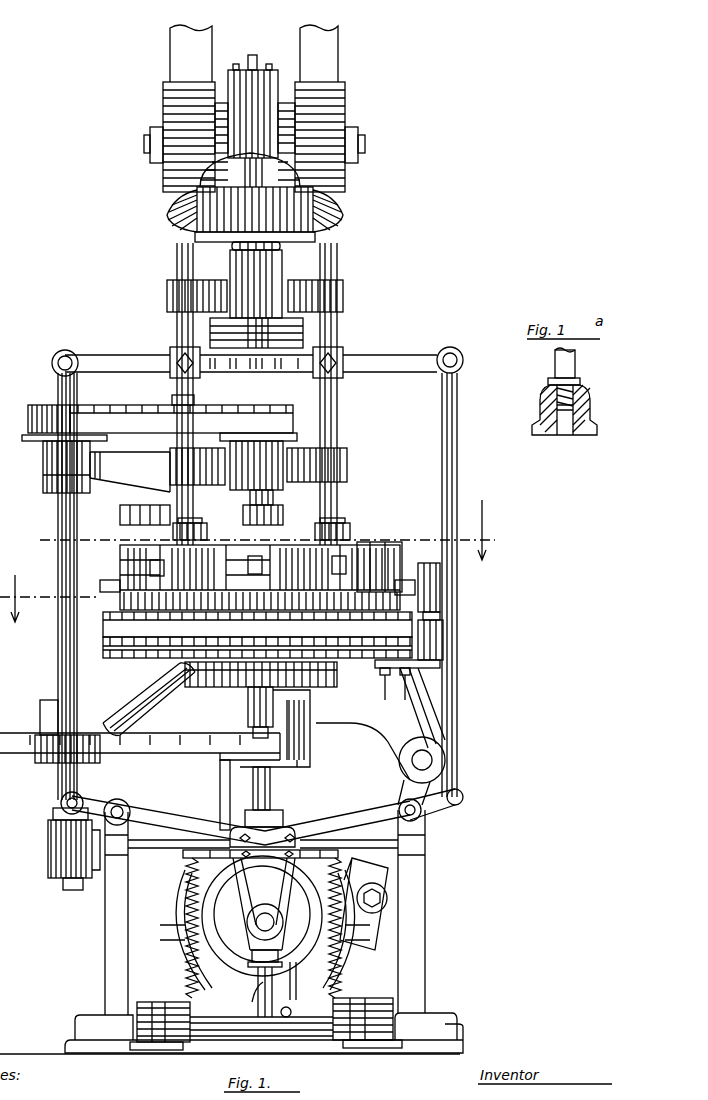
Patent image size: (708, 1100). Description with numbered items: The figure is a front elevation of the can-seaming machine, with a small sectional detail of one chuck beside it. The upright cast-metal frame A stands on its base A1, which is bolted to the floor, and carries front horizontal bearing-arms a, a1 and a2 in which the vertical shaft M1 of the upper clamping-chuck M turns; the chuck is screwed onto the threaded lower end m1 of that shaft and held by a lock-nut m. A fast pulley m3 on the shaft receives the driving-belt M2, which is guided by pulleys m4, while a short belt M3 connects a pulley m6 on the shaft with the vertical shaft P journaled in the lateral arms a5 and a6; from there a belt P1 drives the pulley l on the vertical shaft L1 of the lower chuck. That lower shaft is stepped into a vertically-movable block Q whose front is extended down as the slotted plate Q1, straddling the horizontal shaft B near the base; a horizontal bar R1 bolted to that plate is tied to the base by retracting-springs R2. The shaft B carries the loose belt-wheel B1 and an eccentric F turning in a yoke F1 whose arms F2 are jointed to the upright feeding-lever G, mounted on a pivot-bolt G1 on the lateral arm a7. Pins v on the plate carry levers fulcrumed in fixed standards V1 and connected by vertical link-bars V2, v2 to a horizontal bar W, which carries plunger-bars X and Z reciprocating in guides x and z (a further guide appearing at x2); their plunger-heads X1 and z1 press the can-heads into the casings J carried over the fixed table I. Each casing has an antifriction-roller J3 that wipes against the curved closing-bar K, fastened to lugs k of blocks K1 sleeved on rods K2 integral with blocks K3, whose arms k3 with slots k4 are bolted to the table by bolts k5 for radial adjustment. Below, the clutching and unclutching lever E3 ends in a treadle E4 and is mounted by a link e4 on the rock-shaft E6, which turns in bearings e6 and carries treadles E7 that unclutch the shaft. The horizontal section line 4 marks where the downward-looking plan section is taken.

In FIG. 1, the front horizontal bearing-arm a is at (262, 75).
In FIG. 1, the guide pulleys m4 is at (357, 92).
In FIG. 1, the driving-belt M2 is at (343, 210).
In FIG. 1, the fast pulley m3 is at (315, 238).
In FIG. 1, the front horizontal bearing-arm a1 is at (282, 272).
In FIG. 1, the guide z is at (343, 288).
In FIG. 1, the guide x is at (167, 291).
In FIG. 1, the upright cast-metal frame A is at (303, 330).
In FIG. 1, the plunger-bar Z is at (343, 343).
In FIG. 1, the horizontal bar W is at (125, 355).
In FIG. 1, the vertical shaft P is at (32, 402).
In FIG. 1, the vertical link-bars V2 is at (457, 763).
In FIG. 1, the short belt M3 is at (125, 405).
In FIG. 1, the plunger-bar X is at (177, 395).
In FIG. 1, the pulley m6 is at (297, 436).
In FIG. 1, the block x2 is at (347, 448).
In FIG. 1, the front horizontal bearing-arm a2 is at (283, 466).
In FIG. 1, the lateral bearing-arm a5 is at (118, 474).
In FIG. 1, the lock-nut m is at (273, 497).
In FIG. 1A, the lock-nut m is at (548, 381).
In FIG. 1, the upper clamping-chuck M is at (283, 512).
In FIG. 1A, the upper clamping-chuck M is at (571, 410).
In FIG. 1, the vertical shaft M1 is at (175, 510).
In FIG. 1A, the vertical shaft M1 is at (555, 362).
In FIG. 1, the plunger-head X1 is at (173, 531).
In FIG. 1, the plunger-head z1 is at (350, 530).
In FIG. 1, the section line 4 is at (254, 561).
In FIG. 1, the can pockets or casings J is at (120, 590).
In FIG. 1, the antifriction-roller J3 is at (110, 580).
In FIG. 1, the closing-bar K is at (395, 560).
In FIG. 1, the supporting-lugs k is at (405, 595).
In FIG. 1, the blocks K1 is at (440, 582).
In FIG. 1, the vertical rods K2 is at (440, 616).
In FIG. 1, the blocks K3 is at (443, 638).
In FIG. 1, the horizontal arms k3 is at (410, 672).
In FIG. 1, the bolts k5 is at (385, 685).
In FIG. 1, the slots k4 is at (406, 685).
In FIG. 1, the lateral bearing-arm a7 is at (440, 712).
In FIG. 1, the pivot-bolt G1 is at (432, 758).
In FIG. 1, the feeding-lever G is at (398, 787).
In FIG. 1, the fixed bed or table I is at (337, 675).
In FIG. 1, the vertical shaft L1 is at (272, 785).
In FIG. 1, the pulley l is at (238, 767).
In FIG. 1, the ring or yoke F1 is at (155, 753).
In FIG. 1, the belt P1 is at (40, 735).
In FIG. 1, the rod v2 is at (50, 705).
In FIG. 1, the vertically-movable block Q is at (240, 830).
In FIG. 1, the pins v is at (280, 838).
In FIG. 1, the fixed standards V1 is at (105, 928).
In FIG. 1, the lateral bearing-arm a6 is at (48, 854).
In FIG. 1, the horizontal bar R1 is at (320, 850).
In FIG. 1, the retracting-springs R2 is at (373, 970).
In FIG. 1, the horizontal shaft B is at (277, 921).
In FIG. 1, the slotted plate Q1 is at (264, 904).
In FIG. 1, the loose belt-wheel B1 is at (175, 913).
In FIG. 1, the yoke arms F2 is at (345, 886).
In FIG. 1, the eccentric F is at (245, 960).
In FIG. 1, the rock-shaft E6 is at (256, 990).
In FIG. 1, the link e4 is at (300, 998).
In FIG. 1, the base A1 is at (460, 1025).
In FIG. 1, the treadles E7 is at (375, 1062).
In FIG. 1, the clutching and unclutching lever E3 is at (230, 1040).
In FIG. 1, the treadle E4 is at (261, 1041).
In FIG. 1, the bearings e6 is at (345, 1030).
In FIG. 1A, the threaded lower end m1 is at (540, 398).